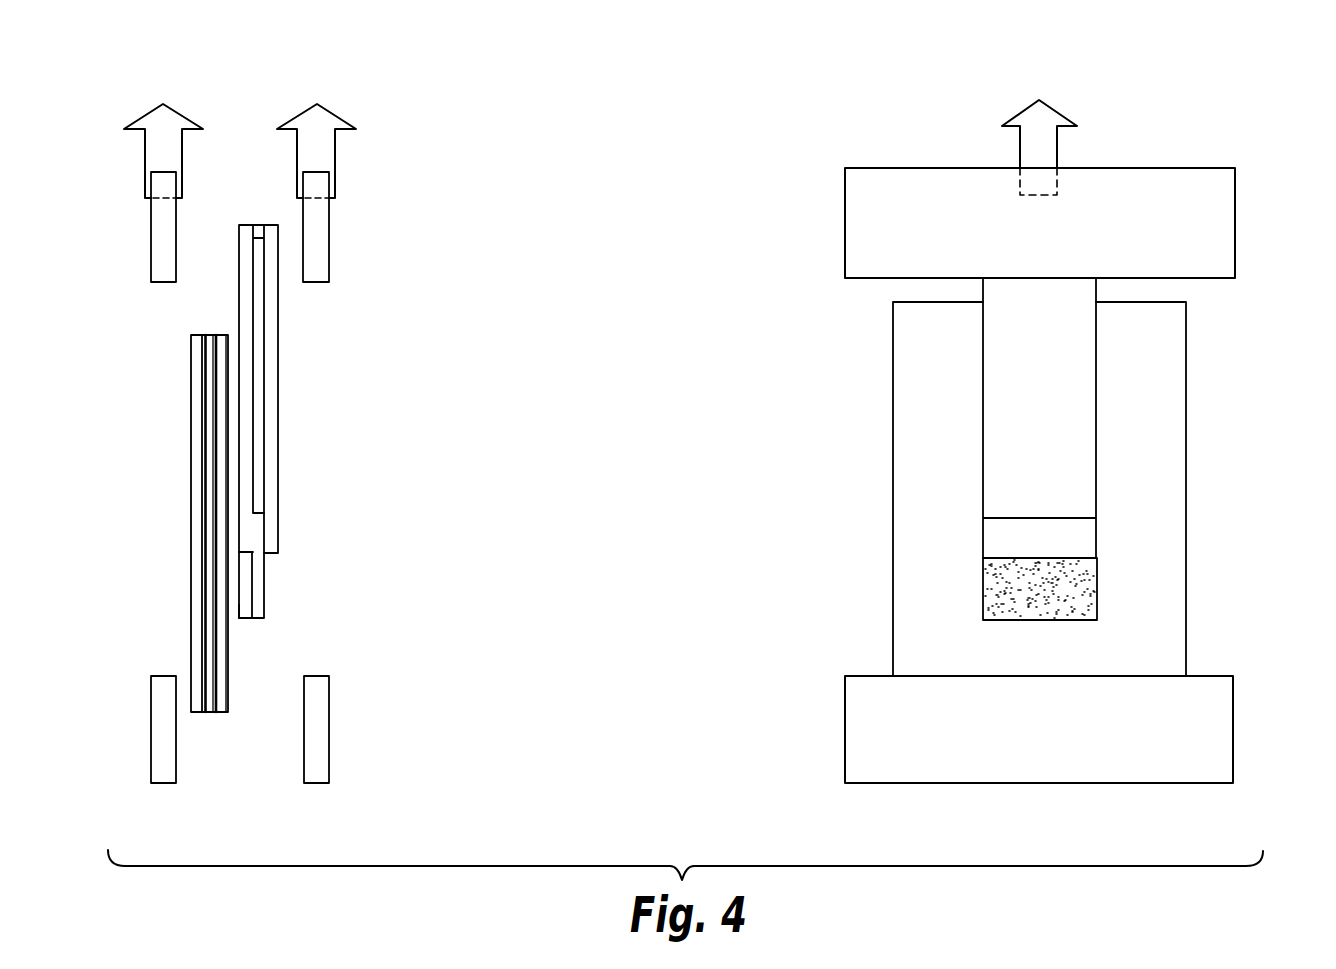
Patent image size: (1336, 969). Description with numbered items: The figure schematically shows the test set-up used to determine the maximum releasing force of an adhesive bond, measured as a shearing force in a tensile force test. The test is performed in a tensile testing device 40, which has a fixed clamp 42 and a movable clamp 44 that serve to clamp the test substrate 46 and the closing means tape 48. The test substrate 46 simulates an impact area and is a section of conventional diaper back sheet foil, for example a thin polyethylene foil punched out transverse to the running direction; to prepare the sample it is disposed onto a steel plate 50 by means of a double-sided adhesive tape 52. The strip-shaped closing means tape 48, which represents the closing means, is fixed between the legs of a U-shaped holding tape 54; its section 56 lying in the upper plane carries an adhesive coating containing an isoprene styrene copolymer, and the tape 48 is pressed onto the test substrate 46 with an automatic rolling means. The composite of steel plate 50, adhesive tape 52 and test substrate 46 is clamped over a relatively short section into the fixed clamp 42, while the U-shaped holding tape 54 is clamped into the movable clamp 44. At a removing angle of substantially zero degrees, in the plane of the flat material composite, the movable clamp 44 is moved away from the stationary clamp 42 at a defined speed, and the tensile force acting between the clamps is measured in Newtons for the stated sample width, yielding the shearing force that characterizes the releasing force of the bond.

The tensile testing device 40 is at (1187, 156).
The fixed clamp 42 is at (1215, 735).
The movable clamp 44 is at (1222, 235).
The test substrate 46 is at (219, 334).
The closing means tape 48 is at (260, 580).
The steel plate 50 is at (195, 498).
The double-sided adhesive tape 52 is at (207, 426).
The U-shaped holding tape 54 is at (273, 349).
The section disposed in the upper plane 56 is at (244, 610).